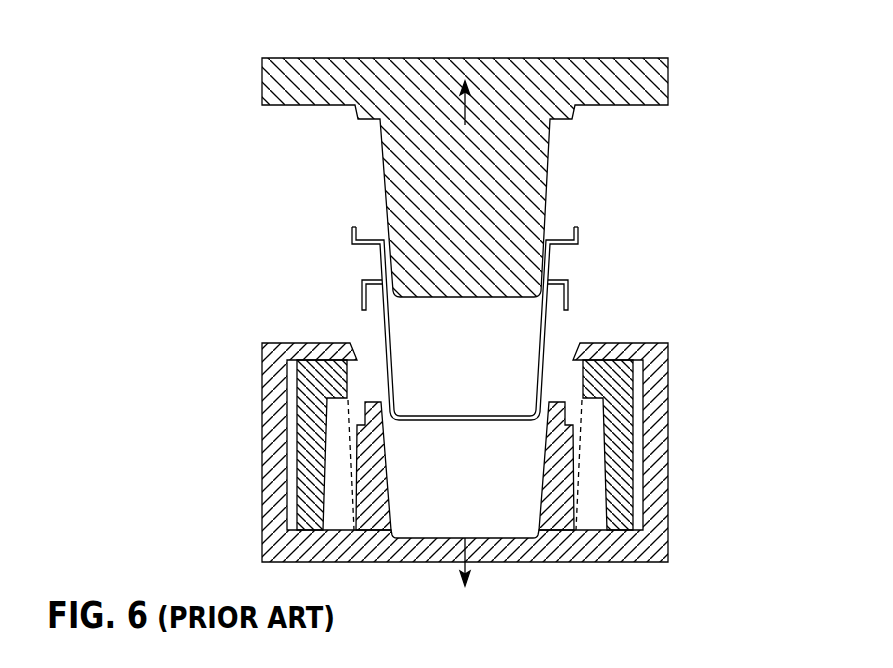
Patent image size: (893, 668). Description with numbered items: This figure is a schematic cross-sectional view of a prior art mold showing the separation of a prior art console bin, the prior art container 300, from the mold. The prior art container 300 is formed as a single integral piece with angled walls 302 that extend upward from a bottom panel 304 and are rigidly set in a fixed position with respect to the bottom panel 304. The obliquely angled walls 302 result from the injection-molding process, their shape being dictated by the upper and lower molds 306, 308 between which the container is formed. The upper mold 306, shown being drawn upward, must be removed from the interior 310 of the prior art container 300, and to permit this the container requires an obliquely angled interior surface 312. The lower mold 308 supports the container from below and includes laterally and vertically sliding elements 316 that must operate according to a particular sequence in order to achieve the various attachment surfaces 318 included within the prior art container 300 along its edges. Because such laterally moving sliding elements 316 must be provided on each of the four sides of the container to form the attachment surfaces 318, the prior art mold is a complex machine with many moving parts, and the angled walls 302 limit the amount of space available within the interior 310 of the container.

The prior art container 300 is at (357, 268).
The angled walls 302 is at (548, 338).
The bottom panel 304 is at (430, 422).
The upper mold 306 is at (618, 66).
The lower mold 308 is at (603, 551).
The interior 310 is at (425, 331).
The obliquely angled interior surface 312 is at (393, 380).
The sliding elements 316 is at (304, 449).
The attachment surfaces 318 is at (573, 277).